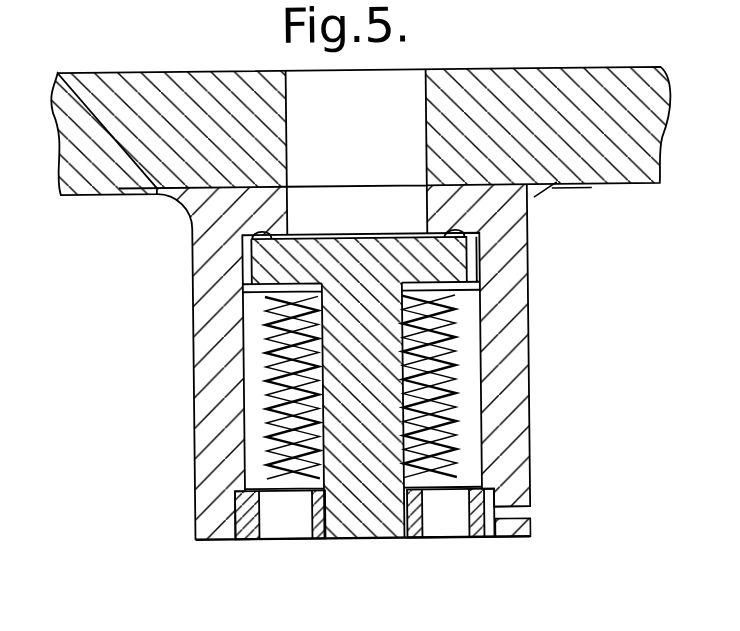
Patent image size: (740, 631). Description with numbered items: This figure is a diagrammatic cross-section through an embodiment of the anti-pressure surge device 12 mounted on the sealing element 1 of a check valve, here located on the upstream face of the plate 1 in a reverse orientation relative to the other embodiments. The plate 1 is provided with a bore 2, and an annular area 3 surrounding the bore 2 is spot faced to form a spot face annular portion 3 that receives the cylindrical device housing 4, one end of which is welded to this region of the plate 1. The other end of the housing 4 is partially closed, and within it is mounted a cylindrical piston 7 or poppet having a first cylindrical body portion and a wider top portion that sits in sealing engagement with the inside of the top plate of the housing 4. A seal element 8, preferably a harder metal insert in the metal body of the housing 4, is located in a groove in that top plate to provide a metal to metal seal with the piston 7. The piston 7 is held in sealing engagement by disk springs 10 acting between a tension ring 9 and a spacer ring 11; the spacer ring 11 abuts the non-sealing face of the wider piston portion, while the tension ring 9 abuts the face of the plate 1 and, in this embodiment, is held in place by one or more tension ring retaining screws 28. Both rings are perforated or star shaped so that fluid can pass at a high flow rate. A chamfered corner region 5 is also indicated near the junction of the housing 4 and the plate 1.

The sealing element 1 is at (612, 80).
The bore 2 is at (395, 94).
The spot faced annular portion 3 is at (593, 187).
The cylindrical device housing 4 is at (383, 361).
The chamfer 5 is at (537, 192).
The cylindrical piston 7 is at (348, 538).
The seal element 8 is at (262, 232).
The tension ring 9 is at (482, 527).
The disk springs 10 is at (452, 364).
The spacer ring 11 is at (242, 298).
The anti-pressure surge device 12 is at (142, 364).
The tension ring retaining screws 28 is at (514, 512).